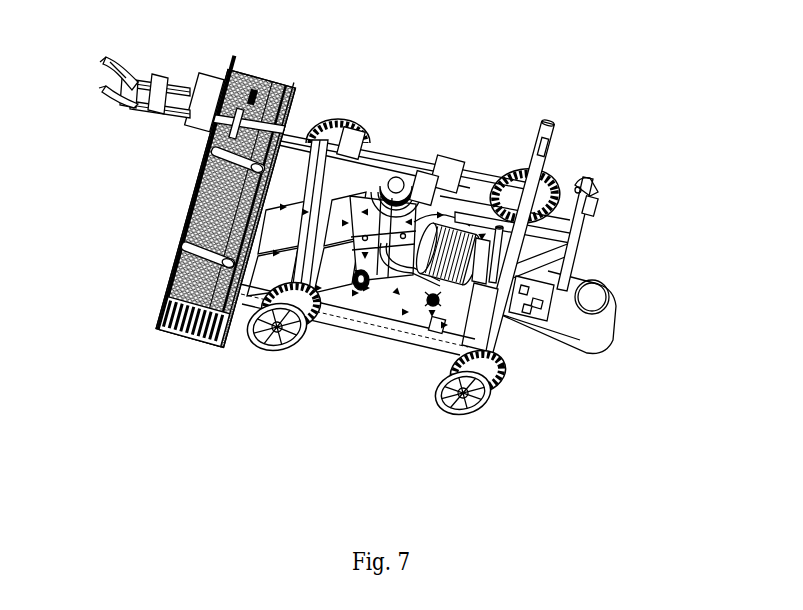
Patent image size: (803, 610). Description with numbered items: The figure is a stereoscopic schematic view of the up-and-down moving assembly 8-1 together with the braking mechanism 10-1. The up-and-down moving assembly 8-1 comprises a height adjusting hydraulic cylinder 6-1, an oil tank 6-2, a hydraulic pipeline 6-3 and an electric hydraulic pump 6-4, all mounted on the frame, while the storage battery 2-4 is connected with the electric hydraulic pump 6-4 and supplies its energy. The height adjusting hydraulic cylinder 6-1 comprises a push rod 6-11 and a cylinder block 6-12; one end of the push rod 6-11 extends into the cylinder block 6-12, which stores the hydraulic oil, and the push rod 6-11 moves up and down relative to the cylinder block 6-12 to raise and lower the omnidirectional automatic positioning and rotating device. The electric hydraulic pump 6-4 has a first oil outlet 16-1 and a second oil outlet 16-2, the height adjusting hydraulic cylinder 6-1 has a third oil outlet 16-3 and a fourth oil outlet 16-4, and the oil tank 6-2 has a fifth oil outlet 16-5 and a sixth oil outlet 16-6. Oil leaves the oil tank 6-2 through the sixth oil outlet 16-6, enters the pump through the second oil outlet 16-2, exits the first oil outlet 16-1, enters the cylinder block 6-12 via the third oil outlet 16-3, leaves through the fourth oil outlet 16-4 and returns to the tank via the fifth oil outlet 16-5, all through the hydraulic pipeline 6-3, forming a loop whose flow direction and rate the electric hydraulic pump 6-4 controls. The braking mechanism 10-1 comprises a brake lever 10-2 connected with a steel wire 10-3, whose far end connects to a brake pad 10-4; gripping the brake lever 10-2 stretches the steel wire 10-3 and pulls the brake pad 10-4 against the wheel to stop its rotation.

The storage battery 2-4 is at (168, 272).
The height adjusting hydraulic cylinder 6-1 is at (432, 170).
The oil tank 6-2 is at (222, 336).
The hydraulic pipeline 6-3 is at (450, 300).
The electric hydraulic pump 6-4 is at (447, 413).
The push rod 6-11 is at (381, 185).
The cylinder block 6-12 is at (190, 195).
The up-and-down moving assembly 8-1 is at (205, 158).
The braking mechanism 10-1 is at (710, 88).
The brake lever 10-2 is at (597, 197).
The steel wire 10-3 is at (557, 207).
The brake pad 10-4 is at (513, 217).
The first oil outlet 16-1 is at (437, 323).
The second oil outlet 16-2 is at (440, 293).
The third oil outlet 16-3 is at (362, 205).
The fourth oil outlet 16-4 is at (357, 283).
The fifth oil outlet 16-5 is at (273, 328).
The sixth oil outlet 16-6 is at (360, 268).